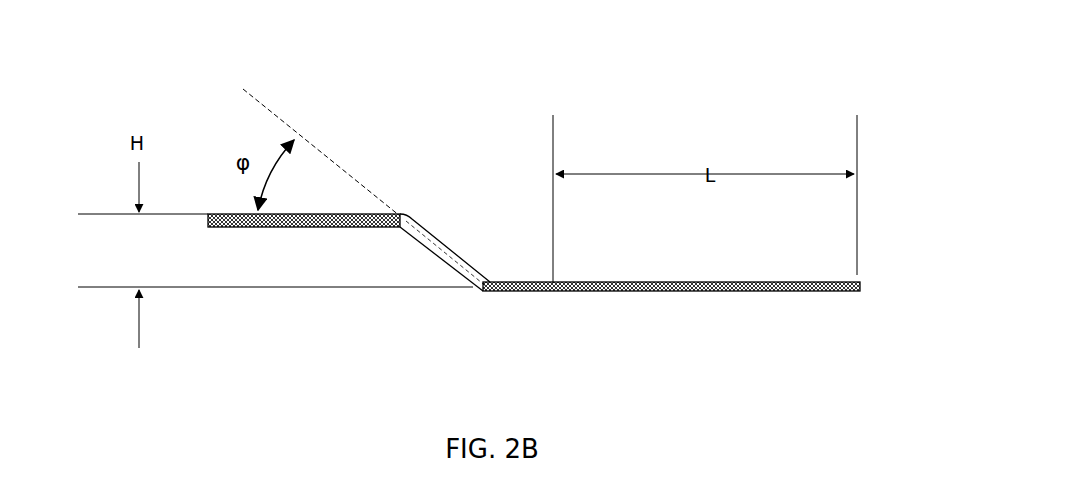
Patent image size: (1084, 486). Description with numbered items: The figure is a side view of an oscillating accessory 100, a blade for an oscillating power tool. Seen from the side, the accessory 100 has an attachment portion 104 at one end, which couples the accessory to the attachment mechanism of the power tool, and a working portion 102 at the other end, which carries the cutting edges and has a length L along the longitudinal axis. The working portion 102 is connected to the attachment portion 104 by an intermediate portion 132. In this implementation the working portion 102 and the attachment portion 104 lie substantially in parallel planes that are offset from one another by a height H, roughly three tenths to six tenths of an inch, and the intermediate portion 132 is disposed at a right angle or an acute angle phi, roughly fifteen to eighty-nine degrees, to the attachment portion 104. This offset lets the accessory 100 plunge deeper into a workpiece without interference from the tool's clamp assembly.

The oscillating accessory 100 is at (430, 193).
The working portion 102 is at (688, 293).
The attachment portion 104 is at (235, 213).
The intermediate portion 132 is at (460, 232).